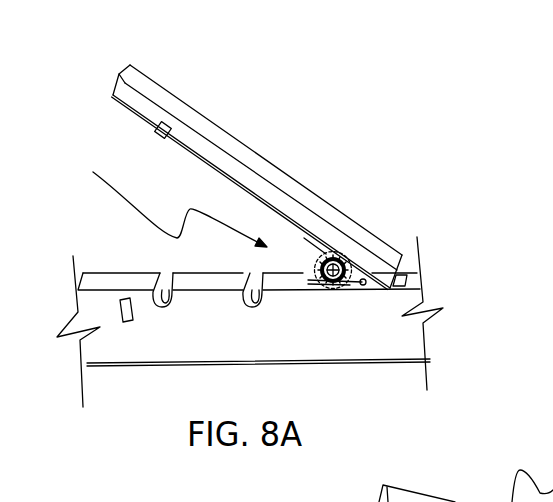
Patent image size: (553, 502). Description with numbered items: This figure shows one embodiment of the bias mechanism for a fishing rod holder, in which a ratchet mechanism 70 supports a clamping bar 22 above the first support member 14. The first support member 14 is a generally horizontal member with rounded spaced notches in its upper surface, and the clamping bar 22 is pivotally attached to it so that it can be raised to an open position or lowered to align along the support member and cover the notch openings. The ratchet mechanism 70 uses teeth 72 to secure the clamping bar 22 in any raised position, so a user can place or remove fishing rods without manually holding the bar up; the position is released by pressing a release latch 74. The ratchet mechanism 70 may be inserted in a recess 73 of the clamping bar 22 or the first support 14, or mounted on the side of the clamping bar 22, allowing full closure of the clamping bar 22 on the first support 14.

The first support member 14 is at (197, 317).
The clamping bar 22 is at (232, 150).
The ratchet mechanism 70 is at (164, 195).
The teeth 72 is at (351, 254).
The recess 73 is at (333, 272).
The release latch 74 is at (333, 270).